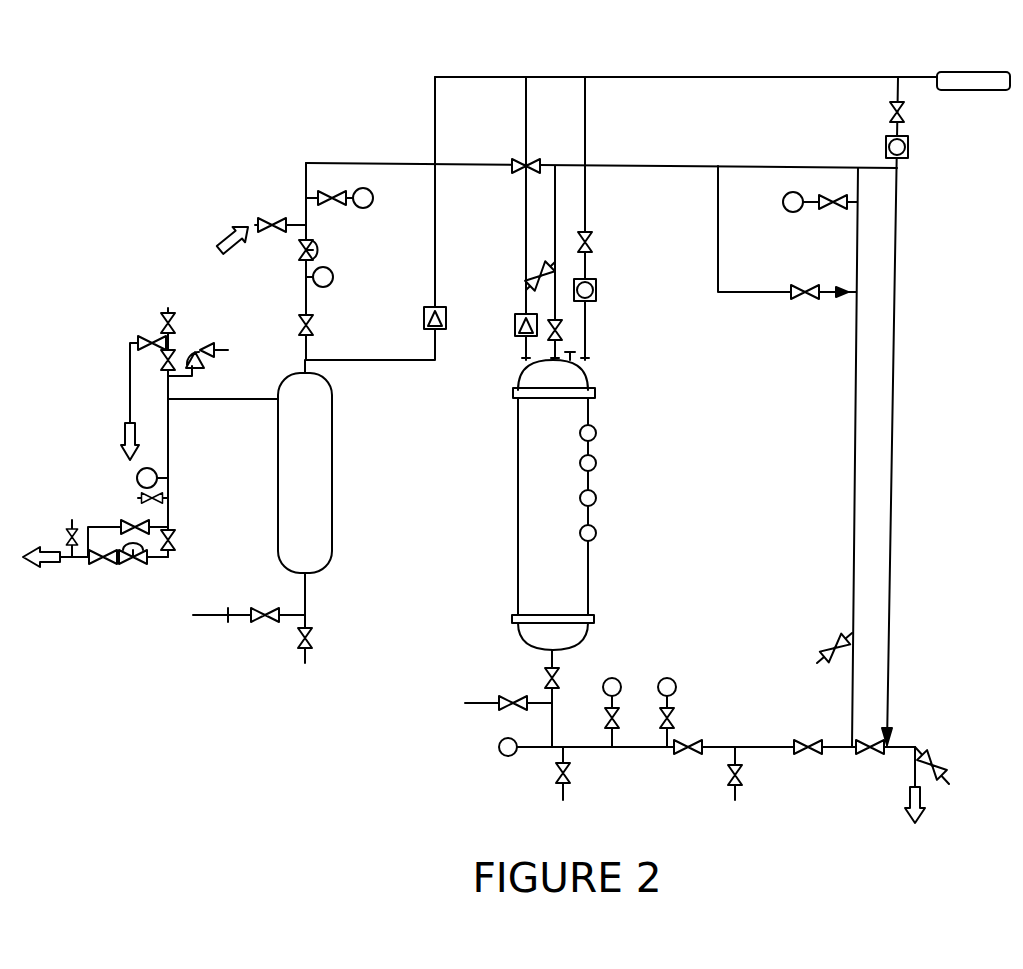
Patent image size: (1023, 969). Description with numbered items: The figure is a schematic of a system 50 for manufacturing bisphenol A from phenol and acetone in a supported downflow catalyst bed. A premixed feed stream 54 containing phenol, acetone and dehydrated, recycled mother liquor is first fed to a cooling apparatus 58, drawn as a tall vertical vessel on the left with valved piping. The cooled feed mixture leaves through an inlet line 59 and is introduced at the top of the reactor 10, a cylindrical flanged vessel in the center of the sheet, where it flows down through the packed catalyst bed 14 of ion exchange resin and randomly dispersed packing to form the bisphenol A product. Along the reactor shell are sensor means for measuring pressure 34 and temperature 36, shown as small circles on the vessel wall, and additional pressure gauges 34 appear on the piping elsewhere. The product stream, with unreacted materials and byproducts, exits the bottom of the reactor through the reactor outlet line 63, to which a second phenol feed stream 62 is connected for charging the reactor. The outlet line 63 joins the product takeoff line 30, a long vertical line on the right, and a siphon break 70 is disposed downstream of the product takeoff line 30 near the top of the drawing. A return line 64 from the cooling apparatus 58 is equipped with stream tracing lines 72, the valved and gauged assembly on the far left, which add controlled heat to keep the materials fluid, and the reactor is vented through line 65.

The reactor 10 is at (522, 505).
The bed 14 is at (540, 552).
The product take-off line 30 is at (852, 406).
The sensor means for measuring pressure 34 is at (597, 431).
The sensor means for measuring temperature 36 is at (597, 496).
The system 50 is at (352, 698).
The premixed feed stream 54 is at (226, 622).
The cooling apparatus 58 is at (333, 481).
The inlet line 59 is at (555, 202).
The second phenol feed stream 62 is at (483, 702).
The reactor outlet line 63 is at (552, 702).
The return line 64 is at (217, 402).
The vent line 65 is at (585, 334).
The siphon break 70 is at (900, 90).
The stream tracing lines 72 is at (100, 527).